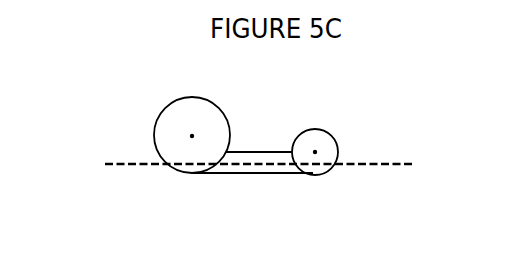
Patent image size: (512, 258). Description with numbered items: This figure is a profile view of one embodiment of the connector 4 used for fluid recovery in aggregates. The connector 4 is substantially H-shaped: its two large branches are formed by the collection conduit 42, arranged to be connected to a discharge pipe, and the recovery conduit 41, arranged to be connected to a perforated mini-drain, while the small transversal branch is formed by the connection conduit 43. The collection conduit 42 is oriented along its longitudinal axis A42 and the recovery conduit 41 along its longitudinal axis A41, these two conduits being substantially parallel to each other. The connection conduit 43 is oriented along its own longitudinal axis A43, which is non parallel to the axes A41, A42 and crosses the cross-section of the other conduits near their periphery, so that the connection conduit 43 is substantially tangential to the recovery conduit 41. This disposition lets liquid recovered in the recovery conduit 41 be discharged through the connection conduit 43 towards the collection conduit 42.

The connector 4 is at (138, 128).
The collection conduit 42 is at (168, 105).
The longitudinal axis of the collection conduit A42 is at (192, 136).
The recovery conduit 41 is at (328, 168).
The longitudinal axis of the recovery conduit A41 is at (315, 152).
The connection conduit 43 is at (257, 175).
The longitudinal axis of the connection conduit A43 is at (390, 164).